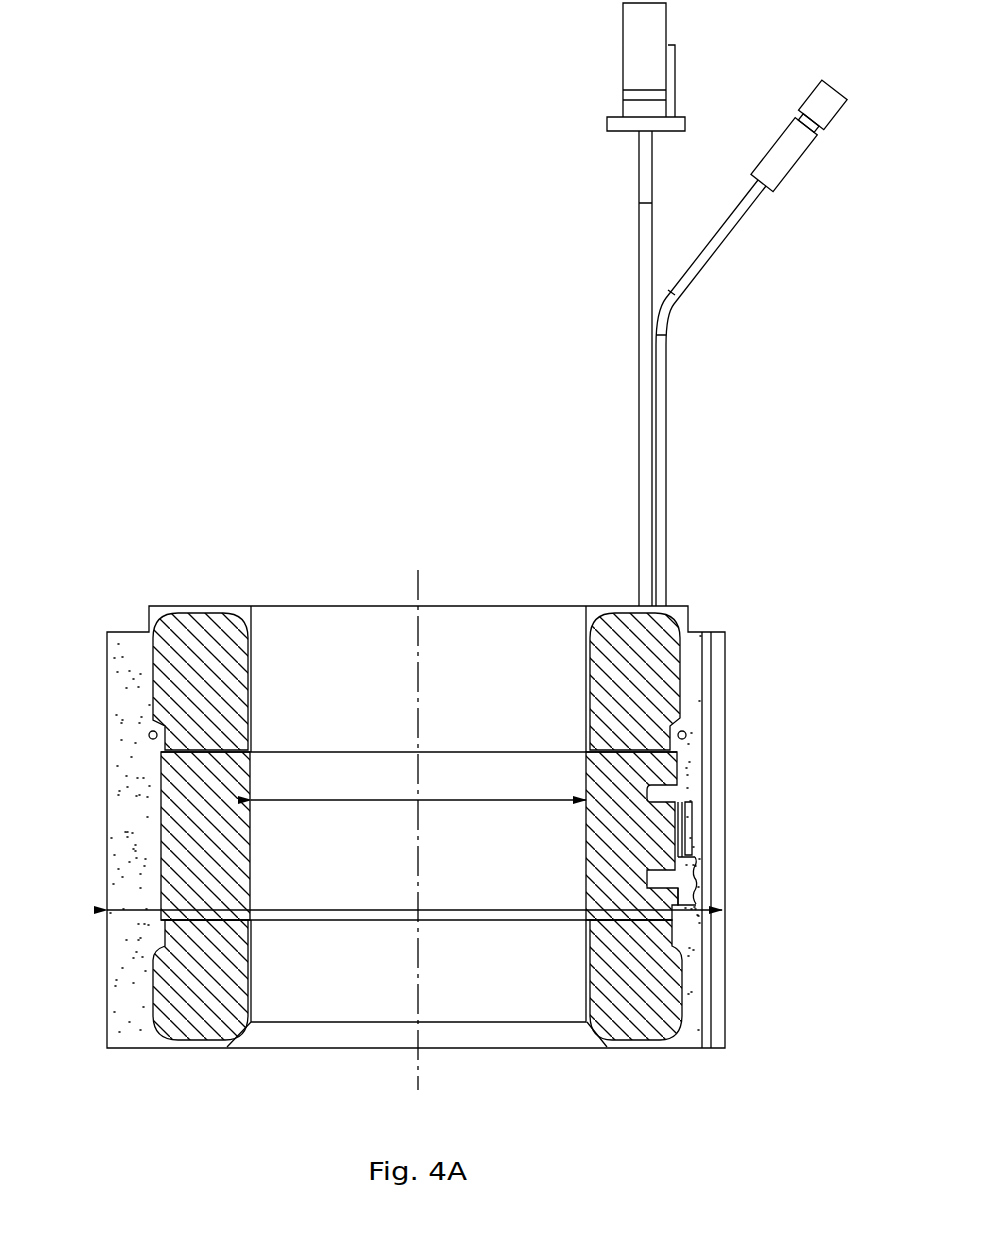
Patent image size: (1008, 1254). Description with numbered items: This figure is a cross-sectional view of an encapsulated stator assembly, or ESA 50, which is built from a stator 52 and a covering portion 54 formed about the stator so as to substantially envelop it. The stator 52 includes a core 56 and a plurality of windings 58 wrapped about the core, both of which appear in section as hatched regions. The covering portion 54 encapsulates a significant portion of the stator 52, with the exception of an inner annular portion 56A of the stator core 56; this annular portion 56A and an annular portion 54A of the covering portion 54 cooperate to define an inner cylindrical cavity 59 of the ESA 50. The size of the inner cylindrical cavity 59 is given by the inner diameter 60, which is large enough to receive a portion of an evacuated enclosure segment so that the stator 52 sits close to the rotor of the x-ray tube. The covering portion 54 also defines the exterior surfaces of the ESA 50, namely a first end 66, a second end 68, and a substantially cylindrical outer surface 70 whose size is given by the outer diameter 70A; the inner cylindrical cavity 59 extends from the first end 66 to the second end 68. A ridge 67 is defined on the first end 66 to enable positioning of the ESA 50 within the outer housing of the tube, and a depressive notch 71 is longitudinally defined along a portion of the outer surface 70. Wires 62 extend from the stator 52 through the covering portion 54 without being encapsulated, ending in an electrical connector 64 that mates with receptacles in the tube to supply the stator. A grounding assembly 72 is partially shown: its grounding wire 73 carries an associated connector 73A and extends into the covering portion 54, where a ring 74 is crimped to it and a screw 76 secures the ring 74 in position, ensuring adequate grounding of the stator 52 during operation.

The encapsulated stator assembly 50 is at (740, 730).
The stator 52 is at (182, 833).
The covering portion 54 is at (695, 1000).
The annular portion of the covering portion 54A is at (590, 708).
The core 56 is at (672, 906).
The annular portion of the stator core 56A is at (628, 886).
The windings 58 is at (190, 672).
The inner cylindrical cavity 59 is at (292, 650).
The inner diameter 60 is at (515, 797).
The wires 62 is at (640, 390).
The electrical connector 64 is at (623, 60).
The first end 66 is at (607, 603).
The ridge 67 is at (130, 628).
The second end 68 is at (148, 1052).
The outer surface 70 is at (726, 805).
The outer diameter 70A is at (313, 910).
The depressive notch 71 is at (727, 651).
The grounding assembly 72 is at (700, 838).
The grounding wire 73 is at (738, 225).
The connector 73A is at (830, 117).
The ring 74 is at (693, 800).
The screw 76 is at (678, 882).